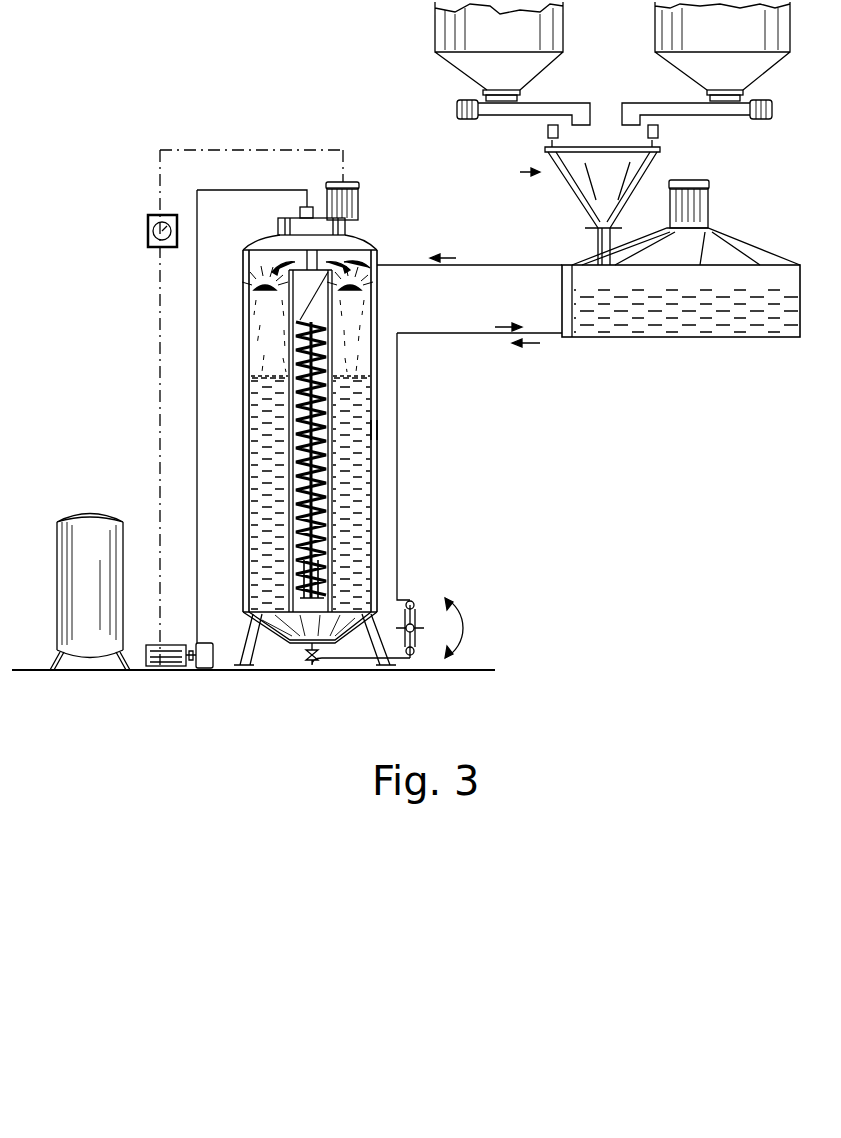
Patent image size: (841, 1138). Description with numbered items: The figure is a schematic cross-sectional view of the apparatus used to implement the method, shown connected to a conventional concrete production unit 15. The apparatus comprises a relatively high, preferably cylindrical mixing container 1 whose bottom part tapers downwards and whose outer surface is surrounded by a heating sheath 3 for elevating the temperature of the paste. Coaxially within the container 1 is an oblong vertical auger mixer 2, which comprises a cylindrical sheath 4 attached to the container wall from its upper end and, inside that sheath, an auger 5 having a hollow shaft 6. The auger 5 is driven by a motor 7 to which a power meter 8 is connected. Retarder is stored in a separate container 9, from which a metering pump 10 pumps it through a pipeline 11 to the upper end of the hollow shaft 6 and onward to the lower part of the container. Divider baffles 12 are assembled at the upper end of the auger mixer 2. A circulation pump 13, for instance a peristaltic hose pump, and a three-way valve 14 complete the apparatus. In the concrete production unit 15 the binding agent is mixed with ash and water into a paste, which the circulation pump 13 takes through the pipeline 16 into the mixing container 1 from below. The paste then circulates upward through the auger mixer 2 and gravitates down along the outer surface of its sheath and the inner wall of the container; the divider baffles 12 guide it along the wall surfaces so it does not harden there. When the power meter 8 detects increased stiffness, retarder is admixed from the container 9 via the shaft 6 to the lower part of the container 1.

The mixing container 1 is at (385, 375).
The auger mixer 2 is at (296, 310).
The heating sheath 3 is at (379, 432).
The cylindrical sheath 4 is at (266, 378).
The auger 5 is at (303, 416).
The hollow shaft 6 is at (330, 592).
The motor 7 is at (352, 182).
The power meter 8 is at (150, 218).
The container 9 is at (92, 530).
The metering pump 10 is at (148, 645).
The pipeline 11 is at (198, 226).
The divider baffles 12 is at (372, 286).
The circulation pump 13 is at (416, 608).
The three-way valve 14 is at (569, 335).
The concrete production unit 15 is at (535, 170).
The pipeline 16 is at (482, 335).